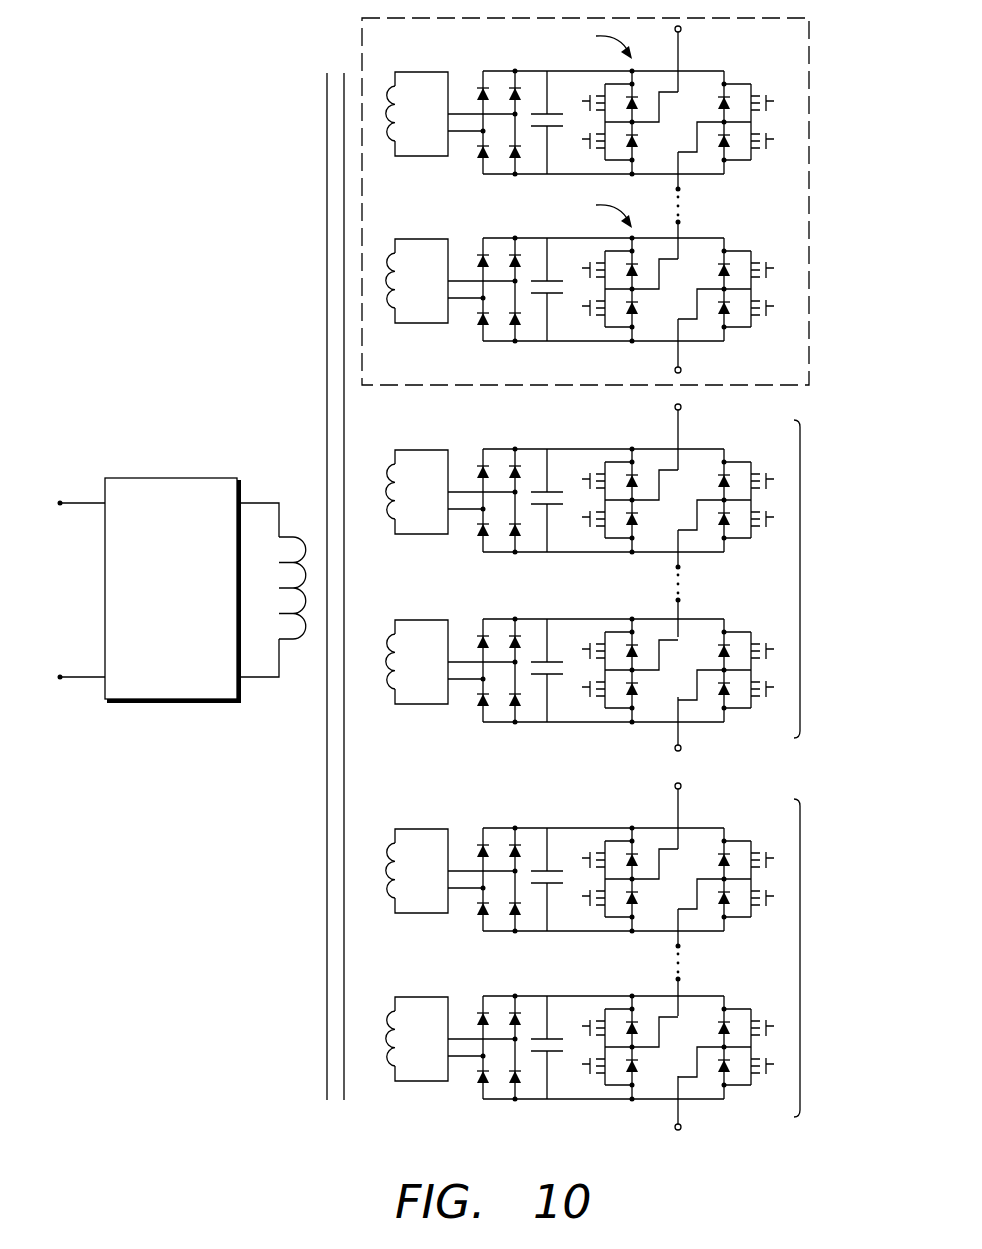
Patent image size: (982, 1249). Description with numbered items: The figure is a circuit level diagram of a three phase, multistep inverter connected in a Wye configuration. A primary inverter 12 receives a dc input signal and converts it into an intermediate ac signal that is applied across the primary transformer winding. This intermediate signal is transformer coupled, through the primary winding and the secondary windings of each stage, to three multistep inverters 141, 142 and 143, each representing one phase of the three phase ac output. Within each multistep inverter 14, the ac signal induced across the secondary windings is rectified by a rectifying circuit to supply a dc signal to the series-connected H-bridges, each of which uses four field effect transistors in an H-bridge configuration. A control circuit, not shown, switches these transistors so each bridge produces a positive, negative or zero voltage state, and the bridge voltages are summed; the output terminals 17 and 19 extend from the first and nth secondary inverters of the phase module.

The primary inverter 12 is at (180, 478).
The multistep inverter 14 is at (626, 574).
The multistep inverter 141 is at (626, 201).
The multistep inverter 142 is at (801, 576).
The multistep inverter 143 is at (801, 955).
The output terminal 17 is at (681, 27).
The output terminal 19 is at (681, 373).